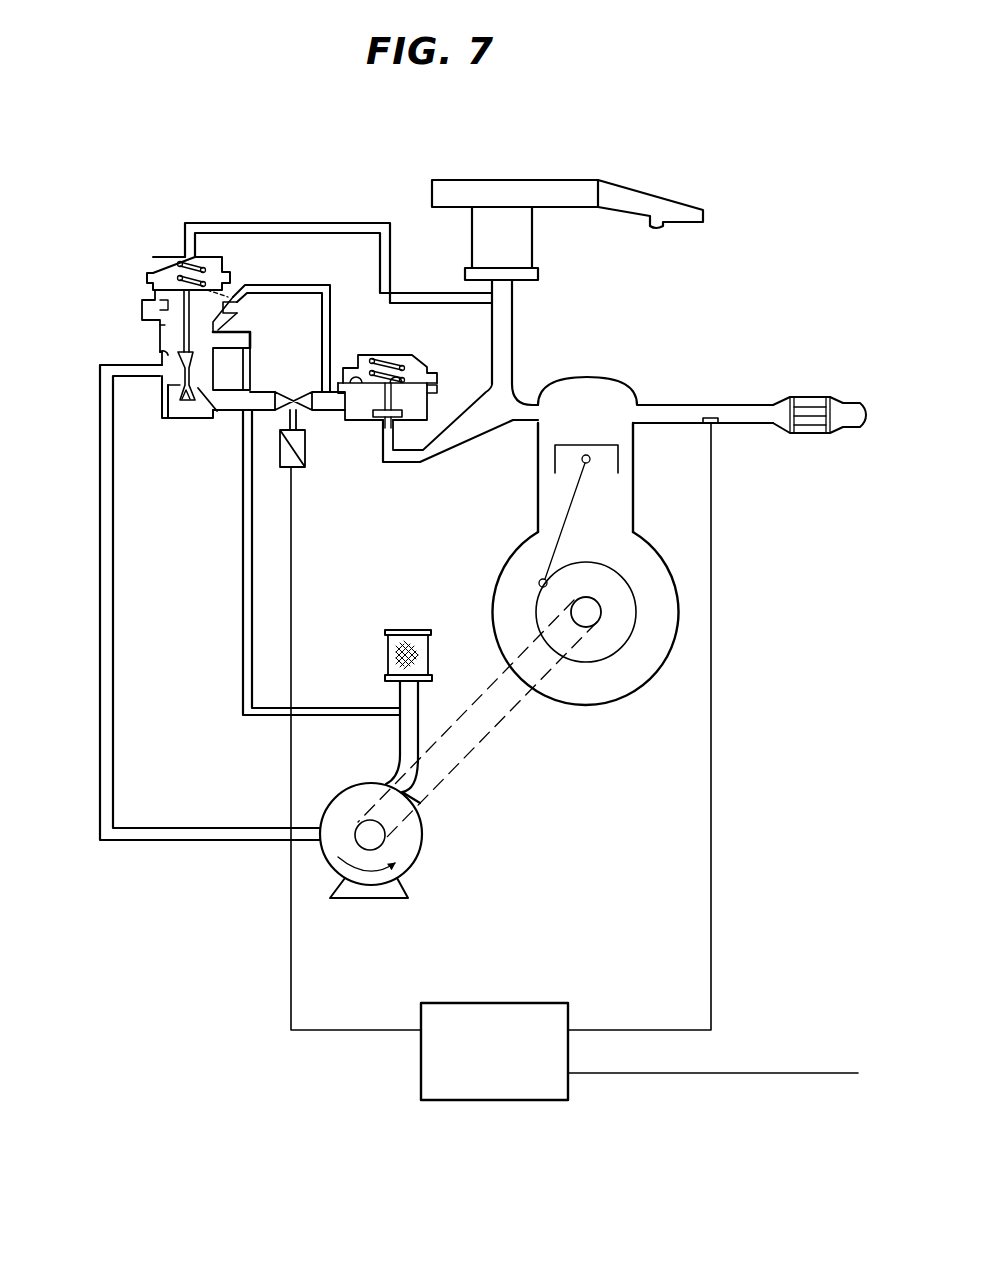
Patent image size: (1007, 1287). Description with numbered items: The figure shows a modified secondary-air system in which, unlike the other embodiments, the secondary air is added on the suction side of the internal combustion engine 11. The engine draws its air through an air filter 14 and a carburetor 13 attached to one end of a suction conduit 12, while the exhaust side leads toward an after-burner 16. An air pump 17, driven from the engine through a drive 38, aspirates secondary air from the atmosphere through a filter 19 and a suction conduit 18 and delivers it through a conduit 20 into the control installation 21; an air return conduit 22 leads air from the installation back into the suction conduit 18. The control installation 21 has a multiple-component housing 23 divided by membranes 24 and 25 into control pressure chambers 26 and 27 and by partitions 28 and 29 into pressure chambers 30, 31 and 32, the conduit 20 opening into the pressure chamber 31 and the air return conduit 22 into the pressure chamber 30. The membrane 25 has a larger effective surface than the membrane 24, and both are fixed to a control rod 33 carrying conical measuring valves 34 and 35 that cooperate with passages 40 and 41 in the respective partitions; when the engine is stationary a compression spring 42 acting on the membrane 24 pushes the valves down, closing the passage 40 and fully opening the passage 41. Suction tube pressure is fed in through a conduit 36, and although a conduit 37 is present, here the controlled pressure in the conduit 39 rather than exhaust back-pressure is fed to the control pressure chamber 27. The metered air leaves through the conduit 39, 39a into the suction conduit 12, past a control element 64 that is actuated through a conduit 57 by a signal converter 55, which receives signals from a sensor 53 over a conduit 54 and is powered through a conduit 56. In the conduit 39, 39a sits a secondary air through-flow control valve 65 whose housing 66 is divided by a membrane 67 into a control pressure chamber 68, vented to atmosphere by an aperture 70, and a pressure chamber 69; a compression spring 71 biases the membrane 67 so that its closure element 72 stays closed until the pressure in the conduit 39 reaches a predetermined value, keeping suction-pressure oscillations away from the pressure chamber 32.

The internal combustion engine 11 is at (507, 583).
The suction conduit 12 is at (505, 331).
The carburetor 13 is at (520, 253).
The air filter 14 is at (578, 193).
The after-burner 16 is at (812, 407).
The air pump 17 is at (410, 840).
The suction conduit 18 is at (403, 697).
The filter 19 is at (418, 651).
The conduit 20 is at (108, 778).
The control installation 21 is at (141, 257).
The air return conduit 22 is at (243, 637).
The multiple-component housing 23 is at (251, 334).
The membrane 24 is at (158, 258).
The membrane 25 is at (168, 305).
The control pressure chamber 26 is at (163, 258).
The control pressure chamber 27 is at (231, 306).
The partition 28 is at (163, 352).
The partition 29 is at (168, 390).
The pressure chamber 30 is at (163, 325).
The pressure chamber 31 is at (205, 372).
The pressure chamber 32 is at (196, 410).
The control rod 33 is at (228, 297).
The conical measuring valve 34 is at (203, 348).
The conical measuring valve 35 is at (190, 404).
The conduit 36 is at (321, 229).
The conduit 37 is at (331, 297).
The drive 38 is at (500, 726).
The conduit 39 is at (332, 413).
The conduit 39a is at (478, 435).
The passage 40 is at (179, 358).
The passage 41 is at (218, 413).
The compression spring 42 is at (204, 266).
The sensor 53 is at (705, 417).
The conduit 54 is at (712, 746).
The signal converter 55 is at (473, 1086).
The conduit 56 is at (715, 1075).
The conduit 57 is at (290, 1009).
The control element 64 is at (314, 457).
The secondary air through-flow control valve 65 is at (446, 352).
The housing 66 is at (428, 402).
The membrane 67 is at (414, 372).
The control pressure chamber 68 is at (356, 361).
The pressure chamber 69 is at (406, 408).
The aperture 70 is at (385, 352).
The compression spring 71 is at (399, 358).
The closure element 72 is at (379, 424).